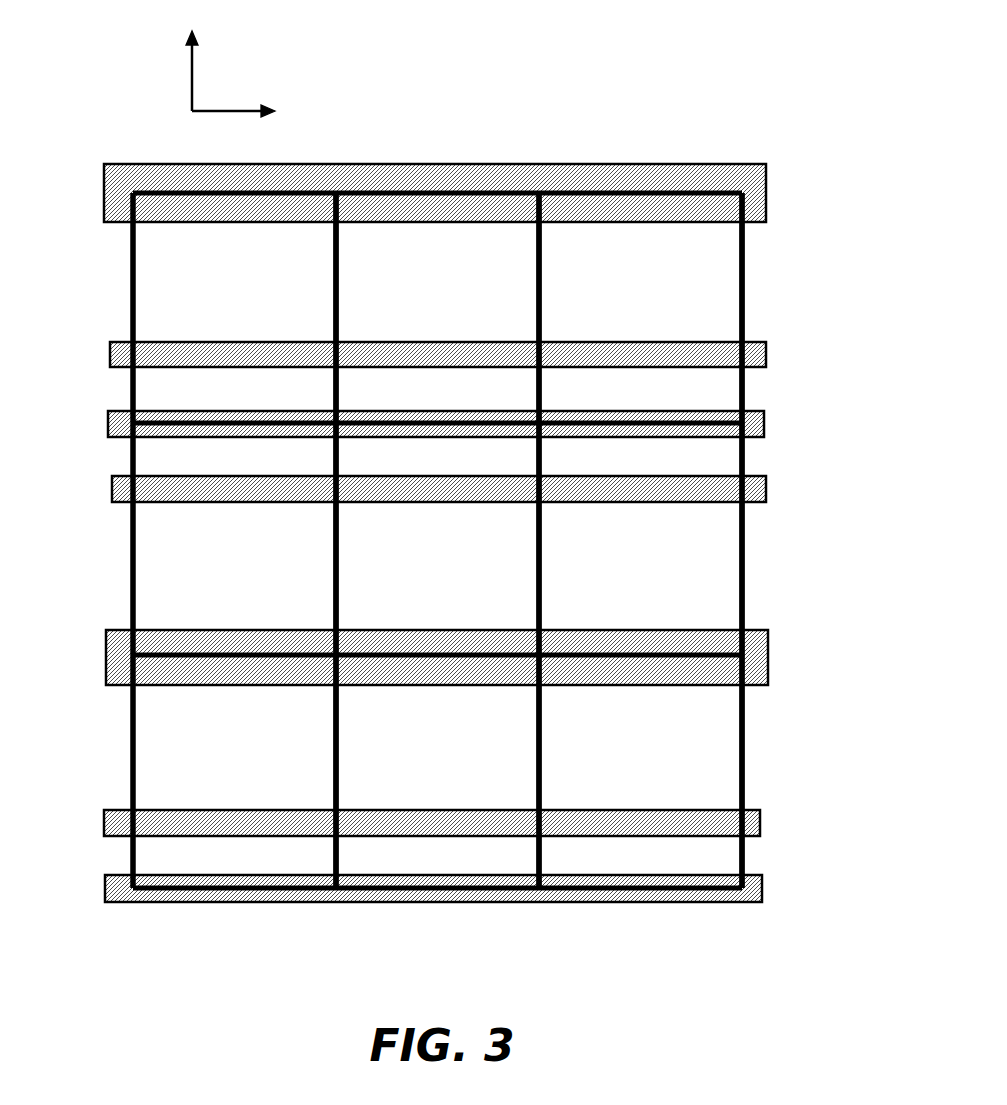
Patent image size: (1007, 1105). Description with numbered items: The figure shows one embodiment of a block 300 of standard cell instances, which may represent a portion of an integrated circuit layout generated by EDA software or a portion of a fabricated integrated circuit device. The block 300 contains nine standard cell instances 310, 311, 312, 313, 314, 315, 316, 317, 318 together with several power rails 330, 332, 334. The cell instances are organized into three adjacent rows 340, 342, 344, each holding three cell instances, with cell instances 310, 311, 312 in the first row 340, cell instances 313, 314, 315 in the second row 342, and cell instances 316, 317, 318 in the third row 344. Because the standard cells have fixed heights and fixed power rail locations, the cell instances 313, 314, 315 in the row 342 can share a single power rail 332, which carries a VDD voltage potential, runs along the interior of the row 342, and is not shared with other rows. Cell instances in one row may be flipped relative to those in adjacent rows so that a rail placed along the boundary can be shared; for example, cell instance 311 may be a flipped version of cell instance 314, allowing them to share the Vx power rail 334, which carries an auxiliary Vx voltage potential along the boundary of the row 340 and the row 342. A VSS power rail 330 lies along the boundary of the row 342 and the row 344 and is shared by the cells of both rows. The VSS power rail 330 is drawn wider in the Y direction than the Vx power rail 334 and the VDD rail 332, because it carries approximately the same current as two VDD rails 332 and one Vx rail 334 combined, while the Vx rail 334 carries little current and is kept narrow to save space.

The block of standard cell instances 300 is at (456, 462).
The standard cell instance 310 is at (234, 302).
The standard cell instance 311 is at (437, 302).
The standard cell instance 312 is at (640, 302).
The standard cell instance 313 is at (234, 520).
The standard cell instance 314 is at (437, 520).
The standard cell instance 315 is at (640, 520).
The standard cell instance 316 is at (234, 759).
The standard cell instance 317 is at (437, 759).
The standard cell instance 318 is at (640, 759).
The VSS power rail 330 is at (768, 648).
The VDD power rail 332 is at (766, 485).
The Vx power rail 334 is at (764, 418).
The row 340 is at (742, 306).
The row 342 is at (742, 540).
The row 344 is at (742, 770).